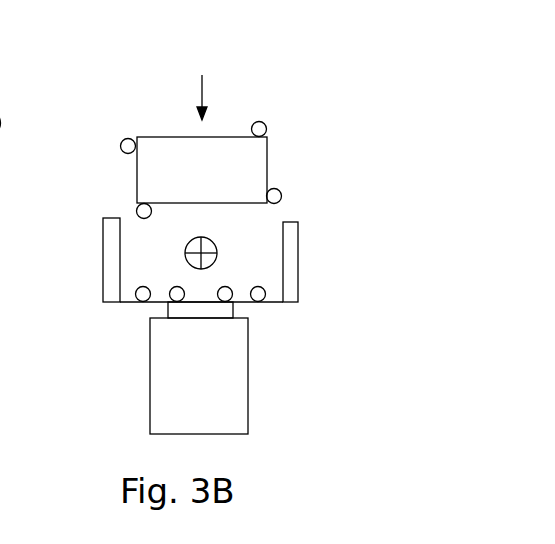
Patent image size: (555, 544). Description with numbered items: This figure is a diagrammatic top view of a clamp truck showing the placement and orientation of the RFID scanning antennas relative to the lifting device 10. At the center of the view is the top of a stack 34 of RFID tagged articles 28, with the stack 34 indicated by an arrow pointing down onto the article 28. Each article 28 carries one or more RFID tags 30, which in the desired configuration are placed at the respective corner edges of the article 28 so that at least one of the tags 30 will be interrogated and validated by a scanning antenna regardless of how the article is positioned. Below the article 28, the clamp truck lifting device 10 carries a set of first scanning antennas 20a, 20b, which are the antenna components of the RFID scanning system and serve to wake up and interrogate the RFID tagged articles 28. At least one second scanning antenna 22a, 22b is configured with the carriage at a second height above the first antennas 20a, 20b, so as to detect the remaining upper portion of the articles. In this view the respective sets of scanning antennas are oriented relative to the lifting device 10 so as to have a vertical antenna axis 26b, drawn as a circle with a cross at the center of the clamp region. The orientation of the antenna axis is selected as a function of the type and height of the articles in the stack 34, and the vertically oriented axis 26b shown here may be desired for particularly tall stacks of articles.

The lifting device 10 is at (317, 188).
The first scanning antenna 20a is at (228, 288).
The first scanning antenna 20b is at (170, 288).
The second scanning antenna 22a is at (267, 303).
The second scanning antenna 22b is at (137, 302).
The vertical antenna axis 26b is at (217, 252).
The article 28 is at (167, 137).
The RFID tag 30 is at (265, 124).
The stack 34 is at (200, 85).